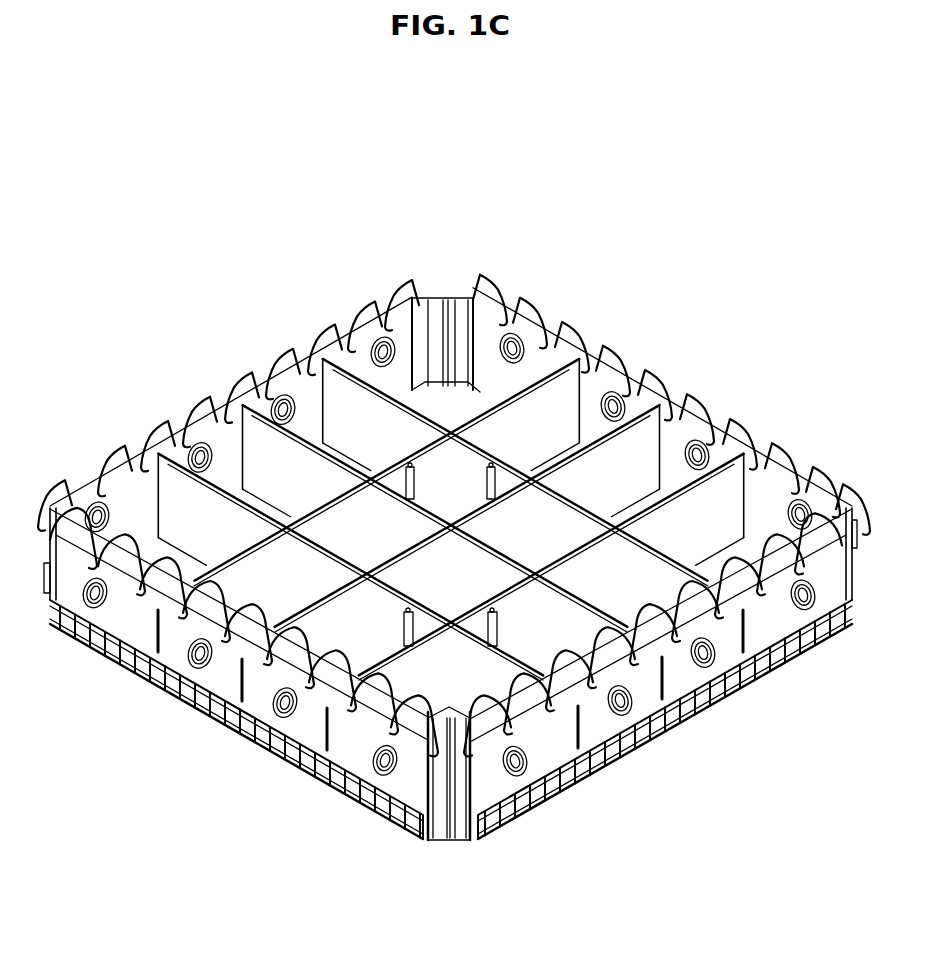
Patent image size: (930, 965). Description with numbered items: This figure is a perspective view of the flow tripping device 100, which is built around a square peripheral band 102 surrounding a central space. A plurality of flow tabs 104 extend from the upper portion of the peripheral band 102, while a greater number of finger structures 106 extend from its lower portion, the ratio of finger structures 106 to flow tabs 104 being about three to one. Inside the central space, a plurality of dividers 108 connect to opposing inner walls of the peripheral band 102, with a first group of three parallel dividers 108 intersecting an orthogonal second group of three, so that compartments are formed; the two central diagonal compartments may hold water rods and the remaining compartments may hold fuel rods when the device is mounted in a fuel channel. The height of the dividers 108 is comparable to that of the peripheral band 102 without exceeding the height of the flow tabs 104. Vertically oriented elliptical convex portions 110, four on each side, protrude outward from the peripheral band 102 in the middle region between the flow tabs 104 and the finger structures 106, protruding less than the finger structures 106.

The flow tripping device 100 is at (431, 141).
The peripheral band 102 is at (767, 612).
The flow tabs 104 is at (573, 417).
The finger structures 106 is at (383, 810).
The dividers 108 is at (345, 417).
The convex portions 110 is at (205, 668).